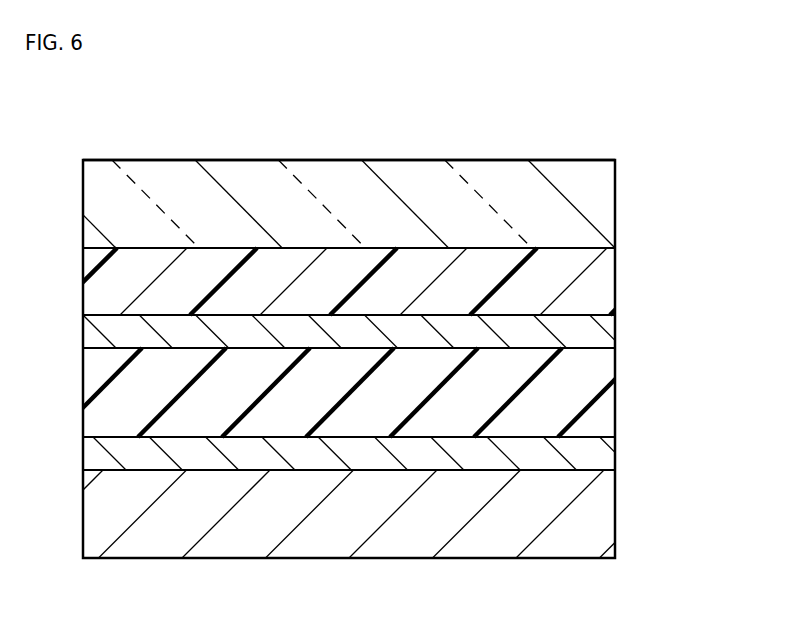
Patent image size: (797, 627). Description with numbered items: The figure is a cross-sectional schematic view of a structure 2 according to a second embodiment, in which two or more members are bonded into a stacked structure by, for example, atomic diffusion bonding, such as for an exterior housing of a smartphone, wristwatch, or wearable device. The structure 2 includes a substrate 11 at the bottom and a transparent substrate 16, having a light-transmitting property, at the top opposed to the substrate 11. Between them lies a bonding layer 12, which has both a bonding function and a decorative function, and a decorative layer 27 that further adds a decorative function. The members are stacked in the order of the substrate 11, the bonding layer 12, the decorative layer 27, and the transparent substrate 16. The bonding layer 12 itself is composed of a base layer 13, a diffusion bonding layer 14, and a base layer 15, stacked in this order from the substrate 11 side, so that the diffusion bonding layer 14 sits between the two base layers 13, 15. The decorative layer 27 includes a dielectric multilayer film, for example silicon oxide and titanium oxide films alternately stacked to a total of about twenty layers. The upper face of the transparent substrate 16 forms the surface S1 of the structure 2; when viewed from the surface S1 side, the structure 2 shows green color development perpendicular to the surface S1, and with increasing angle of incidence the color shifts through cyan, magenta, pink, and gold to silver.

The structure 2 is at (677, 103).
The surface S1 is at (582, 158).
The transparent substrate 16 is at (608, 202).
The decorative layer 27 is at (608, 278).
The base layer 15 is at (608, 330).
The diffusion bonding layer 14 is at (608, 390).
The base layer 13 is at (608, 452).
The bonding layer 12 is at (680, 317).
The substrate 11 is at (608, 513).